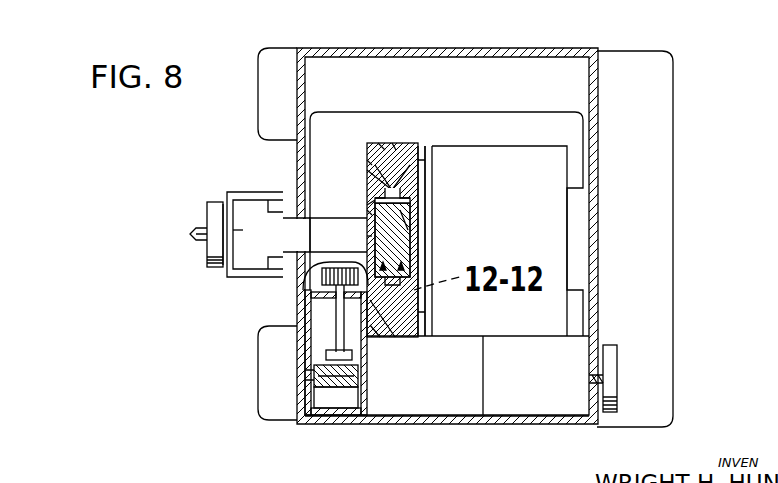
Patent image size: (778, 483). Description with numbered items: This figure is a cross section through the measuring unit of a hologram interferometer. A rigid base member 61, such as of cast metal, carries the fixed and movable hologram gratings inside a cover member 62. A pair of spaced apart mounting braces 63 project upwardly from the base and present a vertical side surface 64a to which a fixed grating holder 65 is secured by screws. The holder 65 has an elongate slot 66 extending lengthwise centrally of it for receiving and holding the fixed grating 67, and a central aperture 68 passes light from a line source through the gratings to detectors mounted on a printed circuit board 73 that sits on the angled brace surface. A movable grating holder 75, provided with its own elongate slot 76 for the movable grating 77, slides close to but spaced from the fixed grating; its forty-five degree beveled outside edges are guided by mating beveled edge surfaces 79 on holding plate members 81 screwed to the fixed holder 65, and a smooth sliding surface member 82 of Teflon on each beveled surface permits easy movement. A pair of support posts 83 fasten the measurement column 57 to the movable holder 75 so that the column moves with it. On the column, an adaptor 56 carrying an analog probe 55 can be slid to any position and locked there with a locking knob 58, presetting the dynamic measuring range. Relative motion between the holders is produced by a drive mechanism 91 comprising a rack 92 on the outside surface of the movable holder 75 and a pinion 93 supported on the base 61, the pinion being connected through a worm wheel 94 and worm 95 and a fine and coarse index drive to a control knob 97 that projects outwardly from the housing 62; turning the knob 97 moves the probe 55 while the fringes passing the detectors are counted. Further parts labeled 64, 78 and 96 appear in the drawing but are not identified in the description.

The analog probe 55 is at (201, 241).
The adaptor 56 is at (235, 280).
The measuring column 57 is at (243, 231).
The locking knob 58 is at (207, 201).
The base member 61 is at (625, 62).
The cover member 62 is at (468, 49).
The mounting braces 63 is at (436, 150).
The block 64 is at (416, 331).
The vertical side surface 64a is at (421, 146).
The fixed grating holder 65 is at (389, 326).
The elongate slot 66 is at (412, 201).
The fixed grating 67 is at (421, 243).
The aperture 68 is at (414, 236).
The printed circuit board 73 is at (542, 256).
The movable grating holder 75 is at (368, 192).
The elongate slot 76 is at (370, 224).
The movable grating 77 is at (373, 231).
The side strip 78 is at (426, 168).
The beveled edge surfaces 79 is at (383, 146).
The holding plate members 81 is at (366, 160).
The smooth sliding surface member 82 is at (394, 146).
The support posts 83 is at (290, 236).
The drive mechanism 91 is at (431, 432).
The rack 92 is at (322, 274).
The pinion 93 is at (316, 296).
The worm wheel 94 is at (322, 373).
The worm 95 is at (340, 389).
The compartment 96 is at (534, 403).
The control knob 97 is at (617, 356).